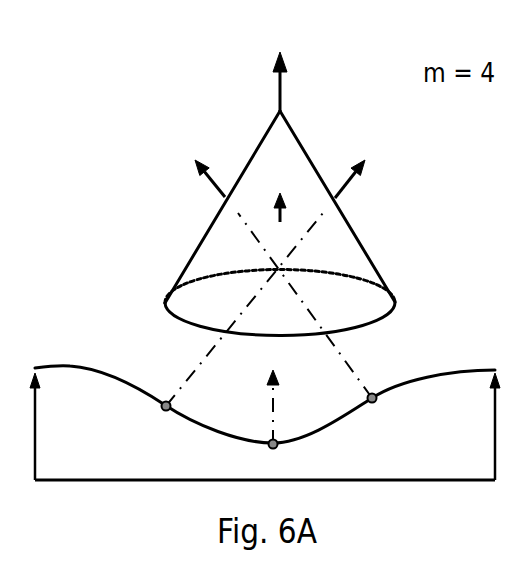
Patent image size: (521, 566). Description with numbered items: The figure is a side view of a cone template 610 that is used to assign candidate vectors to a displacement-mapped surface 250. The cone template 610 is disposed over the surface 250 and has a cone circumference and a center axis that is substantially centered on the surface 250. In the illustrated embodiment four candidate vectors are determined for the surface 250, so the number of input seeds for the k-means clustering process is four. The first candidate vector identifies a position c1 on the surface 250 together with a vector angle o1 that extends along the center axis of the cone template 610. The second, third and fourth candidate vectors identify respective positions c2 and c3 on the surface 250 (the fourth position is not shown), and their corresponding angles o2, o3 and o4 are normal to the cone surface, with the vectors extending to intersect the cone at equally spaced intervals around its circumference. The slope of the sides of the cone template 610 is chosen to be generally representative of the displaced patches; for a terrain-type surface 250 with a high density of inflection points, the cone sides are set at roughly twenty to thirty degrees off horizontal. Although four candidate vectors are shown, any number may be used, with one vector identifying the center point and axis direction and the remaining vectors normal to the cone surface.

The cone template 610 is at (177, 258).
The surface 250 is at (52, 353).
The vector angle o1 is at (283, 67).
The vector angle o2 is at (363, 175).
The vector angle o3 is at (196, 169).
The vector angle o4 is at (283, 197).
The position c1 is at (267, 423).
The position c2 is at (234, 326).
The position c3 is at (322, 323).